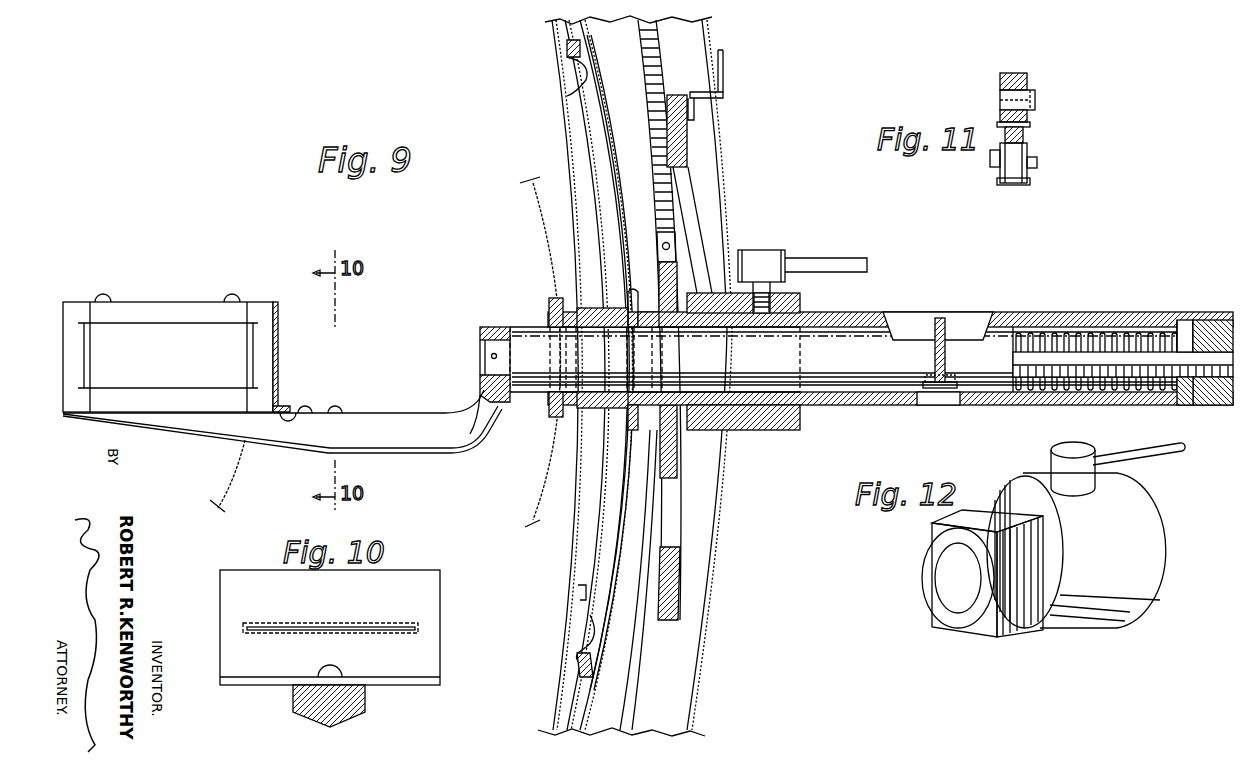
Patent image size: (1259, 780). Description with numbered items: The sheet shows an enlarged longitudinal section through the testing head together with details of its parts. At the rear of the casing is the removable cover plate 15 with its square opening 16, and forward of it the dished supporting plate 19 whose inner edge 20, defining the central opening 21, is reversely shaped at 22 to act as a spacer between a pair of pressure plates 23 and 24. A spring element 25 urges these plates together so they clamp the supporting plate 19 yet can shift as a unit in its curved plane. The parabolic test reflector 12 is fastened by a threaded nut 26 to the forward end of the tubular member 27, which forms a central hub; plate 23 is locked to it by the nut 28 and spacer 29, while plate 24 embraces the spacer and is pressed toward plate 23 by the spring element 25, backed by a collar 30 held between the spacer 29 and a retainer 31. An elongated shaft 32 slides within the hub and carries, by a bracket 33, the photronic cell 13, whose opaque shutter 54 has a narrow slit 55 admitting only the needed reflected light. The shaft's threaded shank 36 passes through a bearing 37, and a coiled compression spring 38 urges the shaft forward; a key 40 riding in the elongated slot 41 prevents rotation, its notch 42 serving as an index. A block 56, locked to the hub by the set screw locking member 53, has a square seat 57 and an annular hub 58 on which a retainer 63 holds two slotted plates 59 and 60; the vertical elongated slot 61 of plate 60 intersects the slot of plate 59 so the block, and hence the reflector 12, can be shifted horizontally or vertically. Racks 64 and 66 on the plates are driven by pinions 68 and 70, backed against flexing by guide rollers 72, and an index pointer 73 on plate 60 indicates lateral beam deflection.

In FIG. 9, the parabolic reflector 12 is at (543, 482).
In FIG. 9, the photronic cell 13 is at (157, 290).
In FIG. 10, the photronic cell 13 is at (230, 596).
In FIG. 9, the rear cover plate 15 is at (708, 36).
In FIG. 9, the square opening 16 is at (712, 98).
In FIG. 9, the dished supporting plate 19 is at (562, 705).
In FIG. 9, the inner edge 20 is at (572, 640).
In FIG. 9, the central opening 21 is at (578, 592).
In FIG. 9, the reversely shaped portion 22 is at (584, 84).
In FIG. 9, the pressure plate 23 is at (570, 147).
In FIG. 9, the pressure plate 24 is at (600, 180).
In FIG. 9, the spring element 25 is at (623, 440).
In FIG. 9, the threaded nut 26 is at (549, 310).
In FIG. 9, the tubular member 27 is at (737, 404).
In FIG. 9, the nut 28 is at (549, 405).
In FIG. 9, the spacer 29 is at (630, 305).
In FIG. 9, the collar 30 is at (633, 440).
In FIG. 9, the retainer 31 is at (660, 306).
In FIG. 9, the elongated shaft 32 is at (851, 380).
In FIG. 9, the bracket 33 is at (388, 413).
In FIG. 10, the bracket 33 is at (308, 712).
In FIG. 9, the threaded shank 36 is at (1047, 352).
In FIG. 9, the bearing 37 is at (1210, 330).
In FIG. 9, the coiled compression spring 38 is at (1105, 345).
In FIG. 9, the key 40 is at (917, 312).
In FIG. 9, the elongated slot 41 is at (865, 313).
In FIG. 9, the notch 42 is at (940, 322).
In FIG. 9, the set screw locking member 53 is at (765, 268).
In FIG. 12, the set screw locking member 53 is at (1072, 456).
In FIG. 9, the opaque shutter 54 is at (279, 324).
In FIG. 9, the narrow slit 55 is at (277, 358).
In FIG. 10, the narrow slit 55 is at (390, 627).
In FIG. 12, the block 56 is at (1148, 530).
In FIG. 12, the square seat 57 is at (1020, 605).
In FIG. 12, the annular hub 58 is at (932, 592).
In FIG. 9, the slotted plate 59 is at (676, 262).
In FIG. 9, the slotted plate 60 is at (687, 146).
In FIG. 9, the elongated slot 61 is at (692, 212).
In FIG. 9, the retainer 63 is at (665, 430).
In FIG. 11, the rack 64 is at (1025, 136).
In FIG. 11, the rack 66 is at (1054, 153).
In FIG. 11, the pinion 68 is at (1030, 82).
In FIG. 11, the pinion 70 is at (1055, 97).
In FIG. 11, the guide rollers 72 is at (1013, 185).
In FIG. 9, the index pointer 73 is at (725, 90).